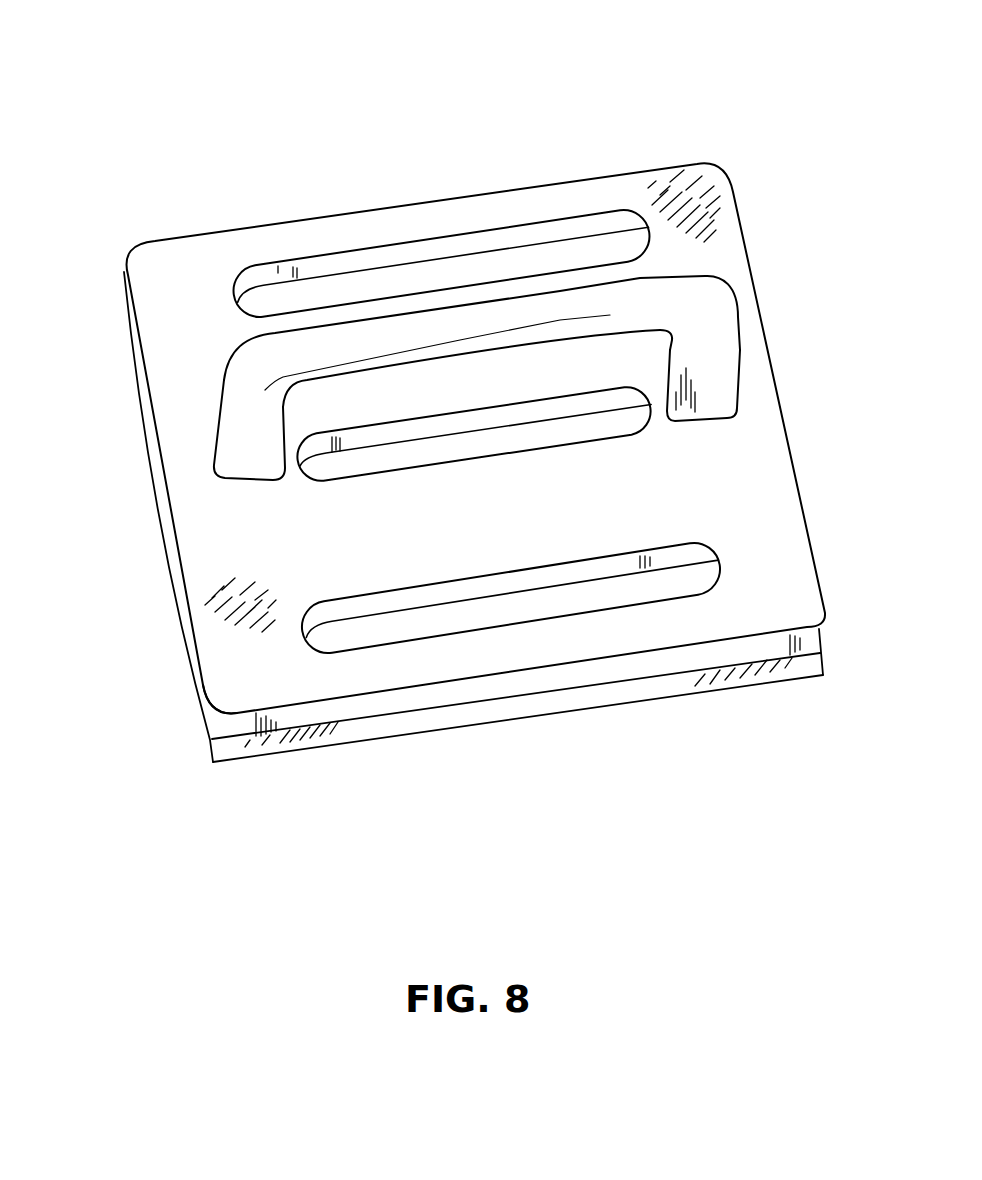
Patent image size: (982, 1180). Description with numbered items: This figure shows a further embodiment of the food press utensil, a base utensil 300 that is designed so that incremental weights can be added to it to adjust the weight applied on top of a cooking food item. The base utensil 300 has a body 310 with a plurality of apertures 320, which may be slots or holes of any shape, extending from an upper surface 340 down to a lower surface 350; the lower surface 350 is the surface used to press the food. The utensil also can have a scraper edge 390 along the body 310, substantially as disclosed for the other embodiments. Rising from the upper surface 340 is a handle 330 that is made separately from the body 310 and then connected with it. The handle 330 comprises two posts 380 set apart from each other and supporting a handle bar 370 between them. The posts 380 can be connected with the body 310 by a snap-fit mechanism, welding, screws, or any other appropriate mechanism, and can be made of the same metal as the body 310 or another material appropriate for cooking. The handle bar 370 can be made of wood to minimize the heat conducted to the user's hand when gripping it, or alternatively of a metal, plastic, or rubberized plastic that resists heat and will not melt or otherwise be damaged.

The base utensil 300 is at (333, 110).
The body 310 is at (167, 283).
The apertures 320 is at (368, 280).
The handle 330 is at (263, 408).
The upper surface 340 is at (234, 686).
The lower surface 350 is at (355, 711).
The handle bar 370 is at (715, 310).
The posts 380 is at (718, 380).
The scraper edge 390 is at (420, 722).